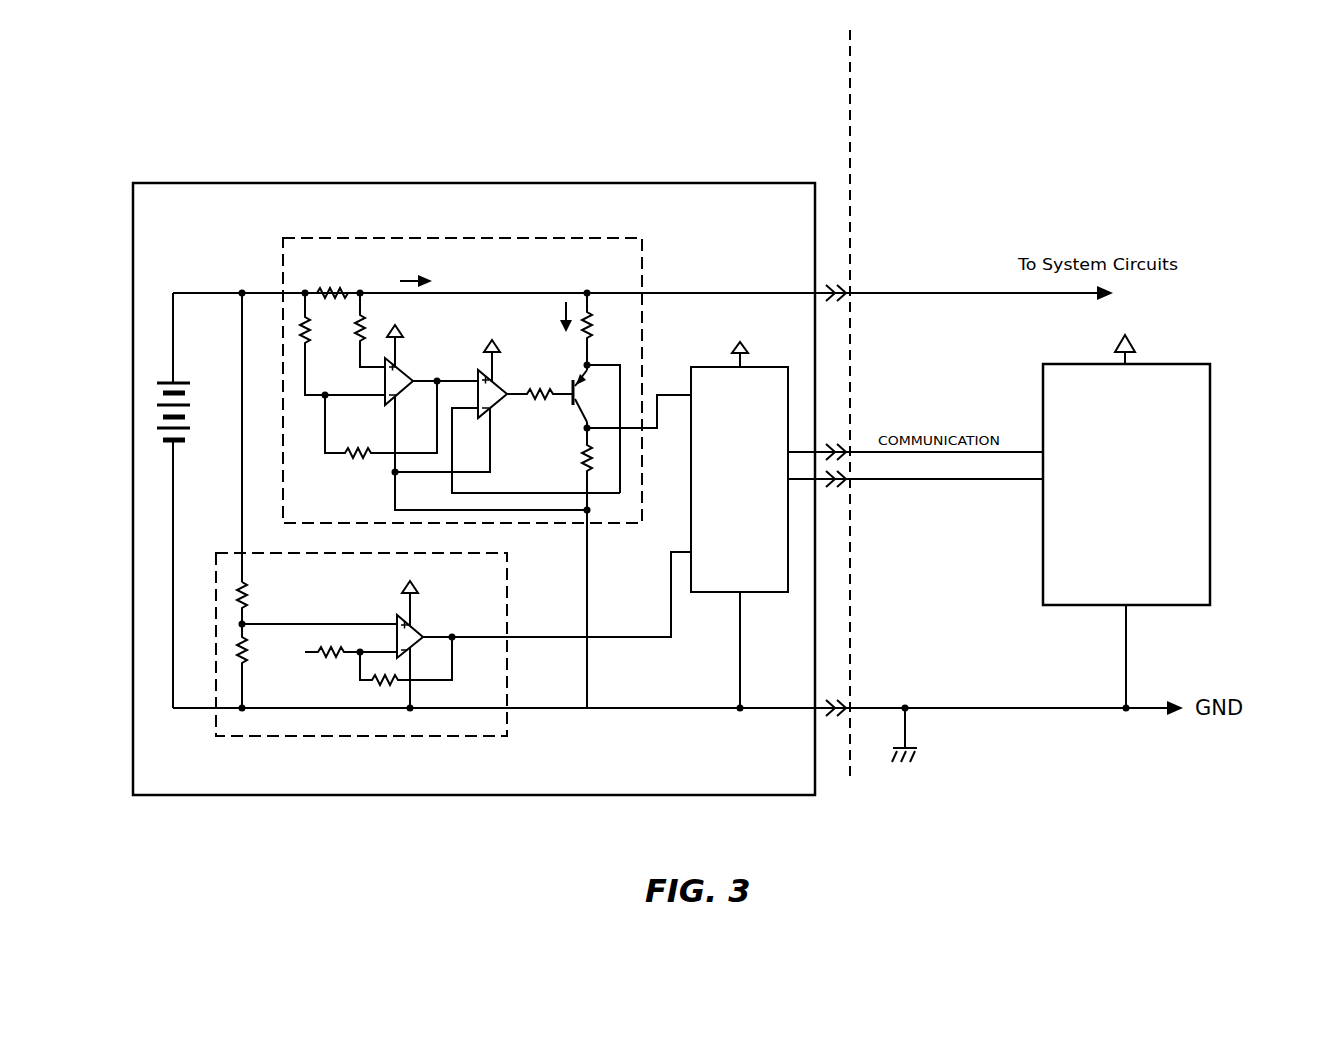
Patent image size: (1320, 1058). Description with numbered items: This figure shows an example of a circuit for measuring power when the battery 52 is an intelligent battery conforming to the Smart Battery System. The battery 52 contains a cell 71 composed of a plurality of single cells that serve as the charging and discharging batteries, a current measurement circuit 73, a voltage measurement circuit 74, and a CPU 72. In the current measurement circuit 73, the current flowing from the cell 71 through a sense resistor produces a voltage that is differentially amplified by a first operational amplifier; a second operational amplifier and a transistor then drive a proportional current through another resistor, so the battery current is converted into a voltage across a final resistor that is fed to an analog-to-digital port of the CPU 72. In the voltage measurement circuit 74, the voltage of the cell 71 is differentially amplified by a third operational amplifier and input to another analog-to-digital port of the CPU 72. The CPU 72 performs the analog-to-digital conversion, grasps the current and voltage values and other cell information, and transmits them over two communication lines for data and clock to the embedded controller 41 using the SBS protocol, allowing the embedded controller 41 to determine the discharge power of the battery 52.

The battery 52 is at (268, 182).
The cell 71 is at (191, 437).
The current measurement circuit 73 is at (537, 233).
The voltage measurement circuit 74 is at (507, 715).
The CPU 72 is at (712, 592).
The embedded controller 41 is at (1210, 487).